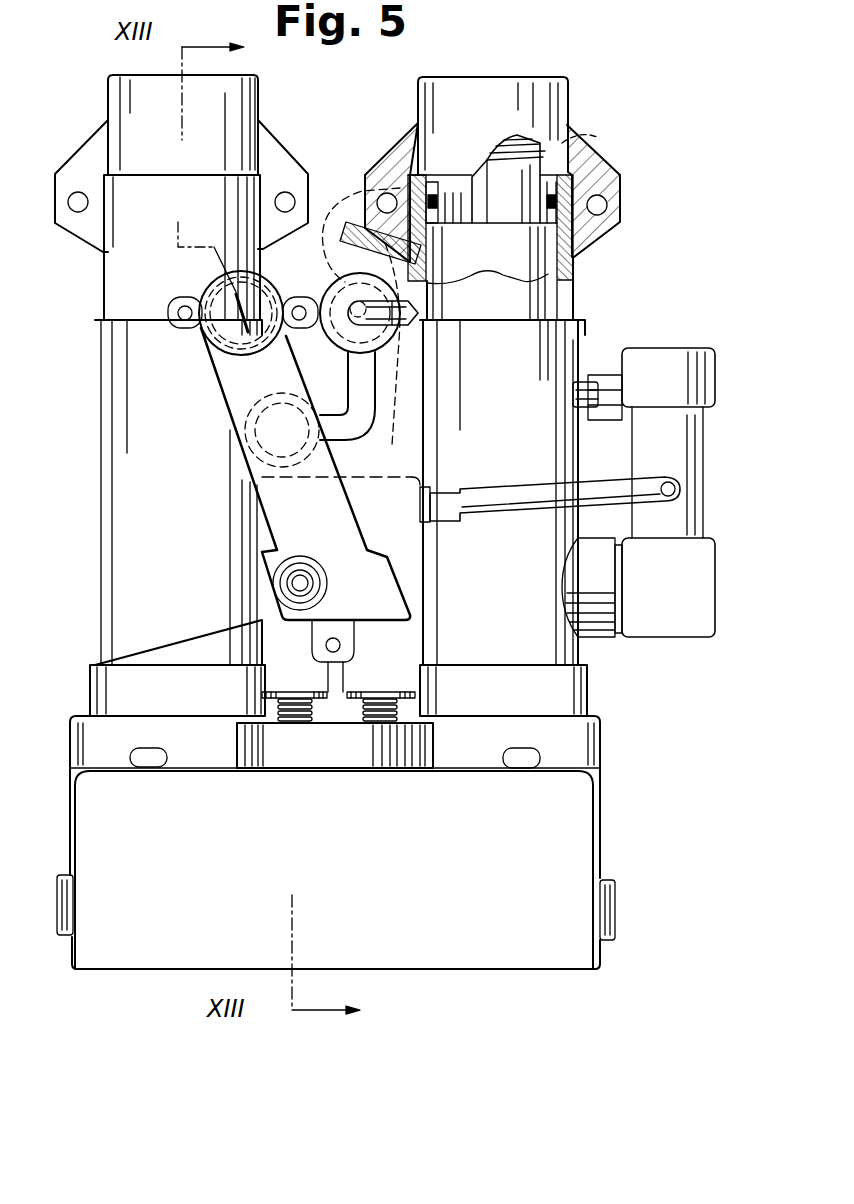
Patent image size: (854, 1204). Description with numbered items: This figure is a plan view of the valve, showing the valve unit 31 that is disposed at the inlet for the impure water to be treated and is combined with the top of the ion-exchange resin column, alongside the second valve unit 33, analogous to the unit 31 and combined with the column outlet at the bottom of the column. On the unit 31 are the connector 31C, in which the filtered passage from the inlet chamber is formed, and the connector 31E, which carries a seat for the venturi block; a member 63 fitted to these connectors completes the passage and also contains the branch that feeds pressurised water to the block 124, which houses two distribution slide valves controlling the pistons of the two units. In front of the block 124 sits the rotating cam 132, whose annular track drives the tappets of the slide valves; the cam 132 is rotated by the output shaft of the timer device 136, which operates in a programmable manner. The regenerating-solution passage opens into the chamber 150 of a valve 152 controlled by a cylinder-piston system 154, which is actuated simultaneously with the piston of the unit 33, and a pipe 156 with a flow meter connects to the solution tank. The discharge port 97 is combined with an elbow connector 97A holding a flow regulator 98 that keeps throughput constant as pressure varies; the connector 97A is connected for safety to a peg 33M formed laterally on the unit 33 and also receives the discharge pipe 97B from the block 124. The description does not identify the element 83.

The valve unit 31 is at (96, 466).
The connector 31C is at (216, 292).
The connector 31E is at (250, 462).
The second valve unit 33 is at (575, 295).
The peg 33M is at (588, 390).
The member 63 is at (227, 388).
The threaded plug 83 is at (533, 177).
The discharge port 97 is at (602, 640).
The elbow connector 97A is at (692, 650).
The discharge pipe 97B is at (508, 500).
The flow regulator 98 is at (680, 587).
The block 124 is at (250, 641).
The rotating cam 132 is at (432, 752).
The timer device 136 is at (435, 955).
The chamber 150 is at (362, 226).
The valve 152 is at (366, 402).
The cylinder-piston system 154 is at (330, 294).
The pipe 156 is at (420, 316).